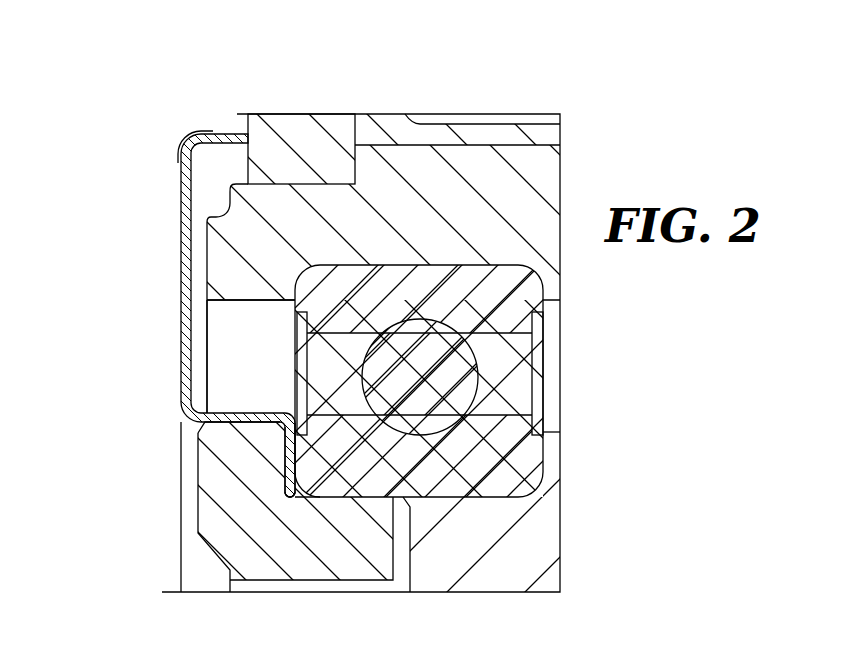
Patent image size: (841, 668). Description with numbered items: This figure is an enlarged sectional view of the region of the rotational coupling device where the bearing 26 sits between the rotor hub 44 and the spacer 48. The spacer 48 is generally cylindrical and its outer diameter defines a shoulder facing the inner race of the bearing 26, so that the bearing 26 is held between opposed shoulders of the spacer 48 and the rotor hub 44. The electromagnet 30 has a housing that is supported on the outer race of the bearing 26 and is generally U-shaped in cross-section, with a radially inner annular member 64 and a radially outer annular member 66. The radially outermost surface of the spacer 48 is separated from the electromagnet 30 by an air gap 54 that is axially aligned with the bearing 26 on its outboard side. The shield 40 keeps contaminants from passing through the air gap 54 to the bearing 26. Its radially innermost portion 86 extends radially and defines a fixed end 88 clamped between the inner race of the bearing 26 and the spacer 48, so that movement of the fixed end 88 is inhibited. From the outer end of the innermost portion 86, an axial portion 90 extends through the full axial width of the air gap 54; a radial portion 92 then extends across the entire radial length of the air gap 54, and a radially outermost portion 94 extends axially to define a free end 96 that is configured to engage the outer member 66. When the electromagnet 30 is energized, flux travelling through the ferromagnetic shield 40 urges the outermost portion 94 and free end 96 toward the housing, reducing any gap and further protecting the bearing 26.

The bearing 26 is at (460, 372).
The electromagnet 30 is at (345, 98).
The shield 40 is at (225, 321).
The rotor hub 44 is at (438, 542).
The spacer 48 is at (322, 542).
The air gap 54 is at (238, 363).
The radially inner annular member 64 is at (425, 235).
The radially outer annular member 66 is at (283, 118).
The radially innermost portion 86 is at (296, 447).
The fixed end 88 is at (283, 490).
The axially extending portion 90 is at (245, 425).
The radially extending portion 92 is at (182, 192).
The radially outermost portion 94 is at (219, 144).
The free end 96 is at (228, 126).